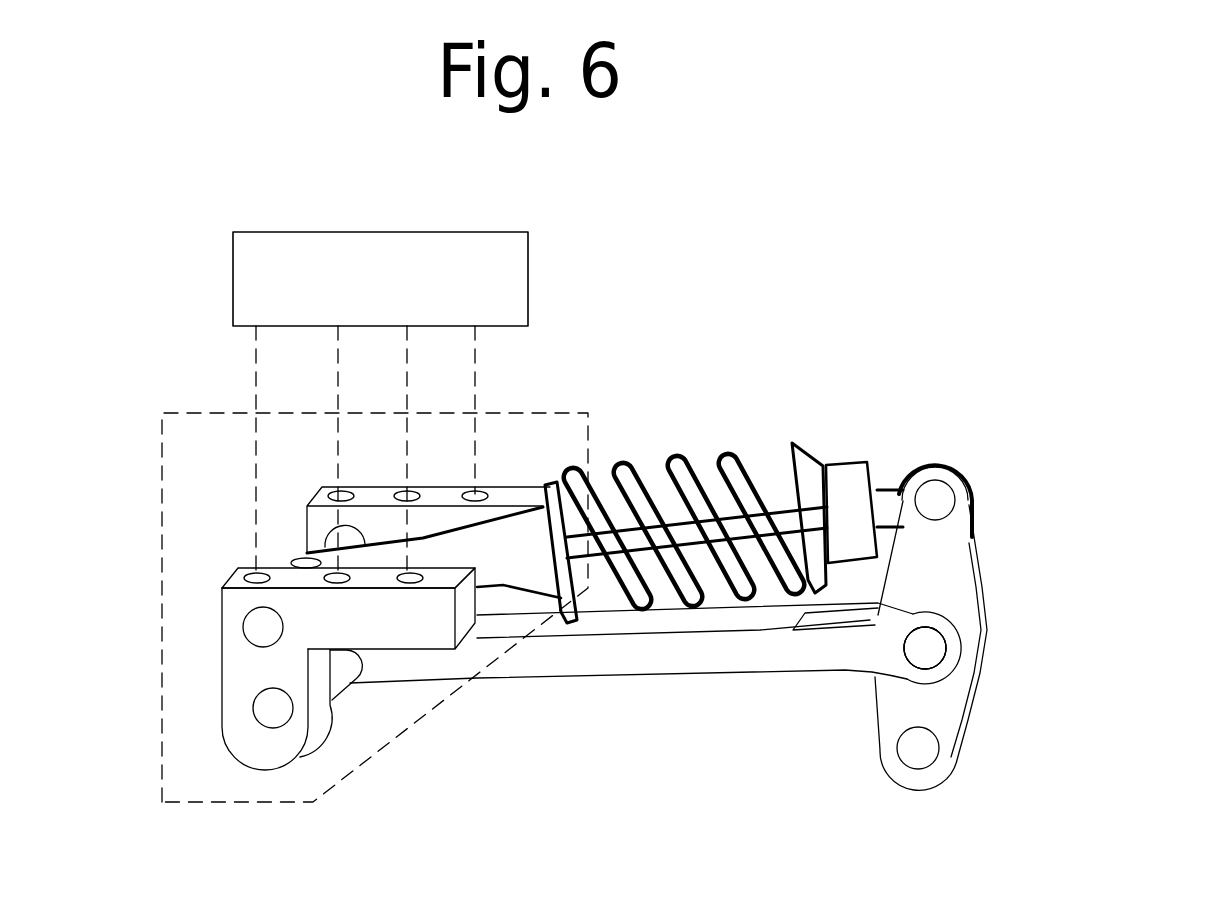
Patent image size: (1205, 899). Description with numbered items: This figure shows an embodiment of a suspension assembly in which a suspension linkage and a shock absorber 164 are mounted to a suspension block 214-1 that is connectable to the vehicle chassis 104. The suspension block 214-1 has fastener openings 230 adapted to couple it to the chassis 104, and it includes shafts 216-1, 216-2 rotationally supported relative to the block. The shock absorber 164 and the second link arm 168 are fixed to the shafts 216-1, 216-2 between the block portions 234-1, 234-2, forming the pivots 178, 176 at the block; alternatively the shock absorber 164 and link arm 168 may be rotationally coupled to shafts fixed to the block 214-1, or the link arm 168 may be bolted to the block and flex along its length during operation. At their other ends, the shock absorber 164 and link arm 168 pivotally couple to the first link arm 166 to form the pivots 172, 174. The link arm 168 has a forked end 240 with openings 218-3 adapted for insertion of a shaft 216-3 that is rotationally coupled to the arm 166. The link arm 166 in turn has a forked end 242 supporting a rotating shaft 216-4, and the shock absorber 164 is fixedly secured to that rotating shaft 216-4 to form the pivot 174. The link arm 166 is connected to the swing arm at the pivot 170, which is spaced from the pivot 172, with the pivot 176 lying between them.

The chassis 104 is at (232, 278).
The suspension block 214-1 is at (560, 380).
The block portion 234-2 is at (522, 487).
The block portion 234-1 is at (273, 750).
The fastener openings 230 is at (470, 490).
The shaft 216-1 is at (322, 550).
The shock absorber 164 is at (530, 552).
The forked end 242 is at (927, 462).
The first link arm 166 is at (943, 445).
The pivot 172 is at (937, 498).
The rotating shaft 216-4 is at (955, 494).
The second link arm 168 is at (588, 655).
The forked end 240 is at (945, 618).
The pivot 176 is at (947, 648).
The shaft 216-3 is at (925, 648).
The openings 218-3 is at (905, 648).
The pivot 170 is at (918, 748).
The pivot 174 is at (242, 635).
The pivot 178 is at (267, 725).
The shaft 216-2 is at (348, 686).